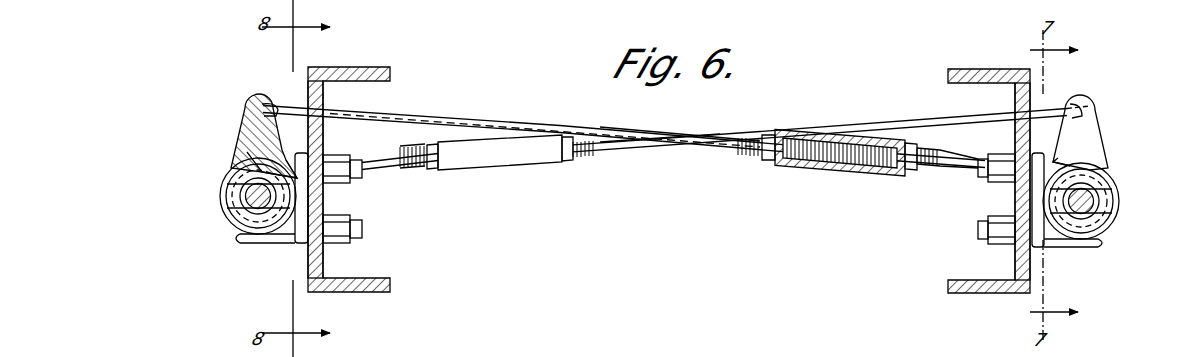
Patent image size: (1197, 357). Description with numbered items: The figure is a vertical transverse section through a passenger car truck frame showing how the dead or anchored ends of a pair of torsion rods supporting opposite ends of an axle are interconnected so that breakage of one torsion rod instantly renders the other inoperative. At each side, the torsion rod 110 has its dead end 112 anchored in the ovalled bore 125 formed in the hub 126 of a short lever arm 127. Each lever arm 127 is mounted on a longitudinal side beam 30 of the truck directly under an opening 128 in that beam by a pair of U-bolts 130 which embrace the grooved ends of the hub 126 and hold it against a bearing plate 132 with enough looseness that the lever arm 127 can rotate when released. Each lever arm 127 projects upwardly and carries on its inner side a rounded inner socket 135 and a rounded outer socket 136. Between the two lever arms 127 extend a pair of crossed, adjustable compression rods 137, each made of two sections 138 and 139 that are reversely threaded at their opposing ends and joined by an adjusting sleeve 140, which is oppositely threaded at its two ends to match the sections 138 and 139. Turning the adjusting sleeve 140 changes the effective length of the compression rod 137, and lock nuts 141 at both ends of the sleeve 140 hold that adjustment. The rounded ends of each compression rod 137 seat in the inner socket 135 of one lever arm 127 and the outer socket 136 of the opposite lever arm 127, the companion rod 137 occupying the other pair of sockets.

The longitudinal side beam 30 is at (390, 75).
The bearing 110 is at (250, 205).
The dead end of torsion rod 112 is at (260, 217).
The ovalled bore 125 is at (250, 188).
The hub 126 is at (220, 173).
The lever arm 127 is at (242, 128).
The opening 128 is at (313, 93).
The U-bolt 130 is at (262, 240).
The bearing plate 132 is at (302, 250).
The inner socket 135 is at (247, 152).
The outer socket 136 is at (242, 110).
The compression rod 137 is at (528, 95).
The rod section 138 is at (393, 165).
The rod section 139 is at (688, 143).
The adjusting sleeve 140 is at (503, 167).
The lock nut 141 is at (435, 167).